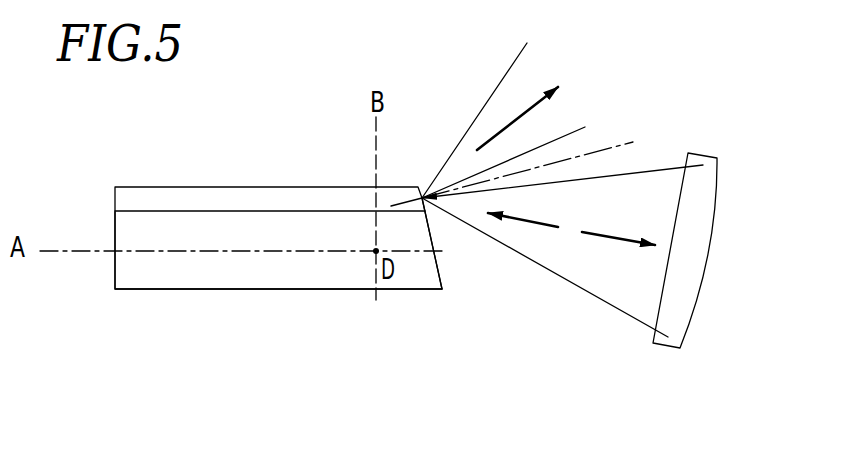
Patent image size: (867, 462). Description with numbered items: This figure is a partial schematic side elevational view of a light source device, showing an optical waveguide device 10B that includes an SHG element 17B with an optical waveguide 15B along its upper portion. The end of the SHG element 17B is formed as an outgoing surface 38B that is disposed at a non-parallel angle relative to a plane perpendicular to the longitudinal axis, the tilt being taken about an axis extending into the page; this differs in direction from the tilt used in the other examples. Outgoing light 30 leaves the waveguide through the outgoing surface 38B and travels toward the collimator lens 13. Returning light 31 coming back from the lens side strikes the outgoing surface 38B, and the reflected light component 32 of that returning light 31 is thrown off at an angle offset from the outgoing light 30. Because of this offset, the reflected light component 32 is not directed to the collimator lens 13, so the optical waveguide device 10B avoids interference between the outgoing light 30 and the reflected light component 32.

The optical waveguide device 10B is at (297, 232).
The optical waveguide 15B is at (260, 197).
The SHG element 17B is at (193, 292).
The outgoing surface 38B is at (437, 267).
The reflected light component 32 is at (503, 130).
The returning light 31 is at (522, 220).
The outgoing light 30 is at (598, 237).
The collimator lens 13 is at (688, 325).